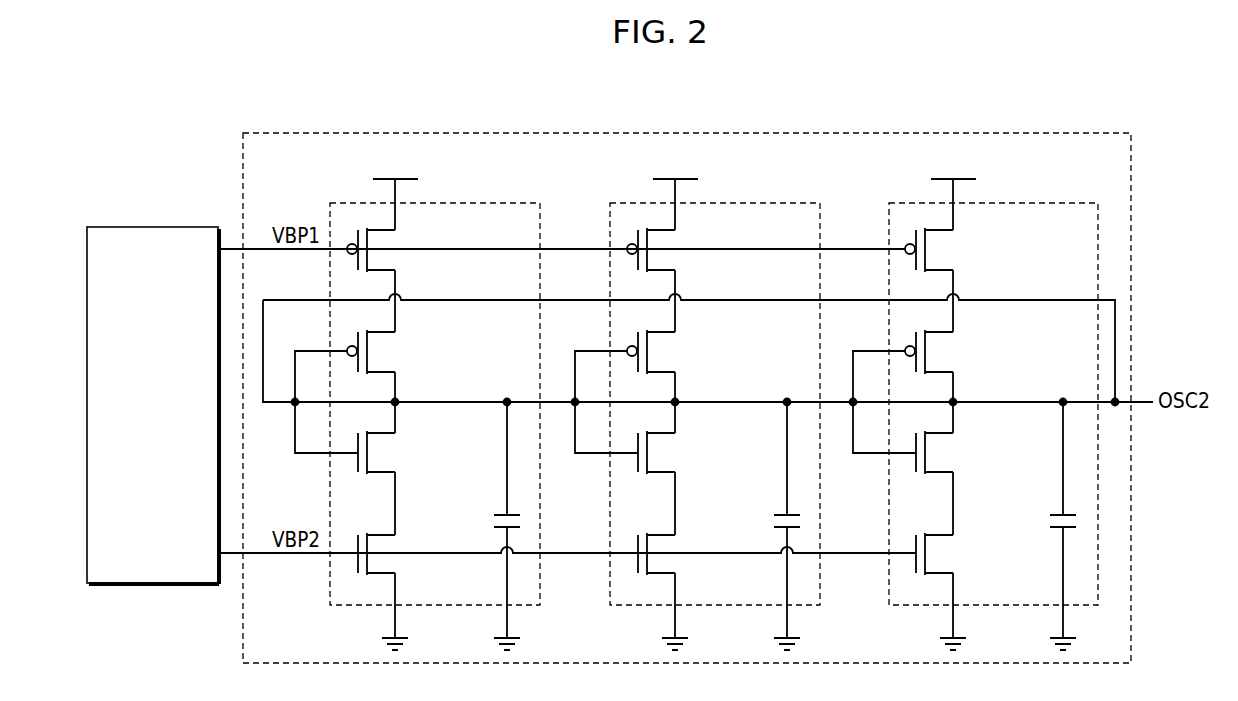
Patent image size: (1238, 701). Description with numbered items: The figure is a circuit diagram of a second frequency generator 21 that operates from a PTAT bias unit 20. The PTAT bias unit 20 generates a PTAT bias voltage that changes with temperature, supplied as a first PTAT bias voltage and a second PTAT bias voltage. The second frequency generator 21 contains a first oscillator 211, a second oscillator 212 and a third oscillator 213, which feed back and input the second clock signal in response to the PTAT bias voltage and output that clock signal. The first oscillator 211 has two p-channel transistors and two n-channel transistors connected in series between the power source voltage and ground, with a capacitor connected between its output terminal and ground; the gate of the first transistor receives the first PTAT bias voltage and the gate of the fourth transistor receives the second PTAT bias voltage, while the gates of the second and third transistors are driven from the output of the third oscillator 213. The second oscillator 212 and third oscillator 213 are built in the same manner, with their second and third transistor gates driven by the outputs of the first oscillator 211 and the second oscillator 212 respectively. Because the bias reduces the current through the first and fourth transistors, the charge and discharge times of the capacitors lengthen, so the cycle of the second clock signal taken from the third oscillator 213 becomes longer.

The PTAT bias unit 20 is at (181, 227).
The second frequency generator 21 is at (596, 133).
The first oscillator 211 is at (484, 203).
The second oscillator 212 is at (696, 401).
The third oscillator 213 is at (974, 401).